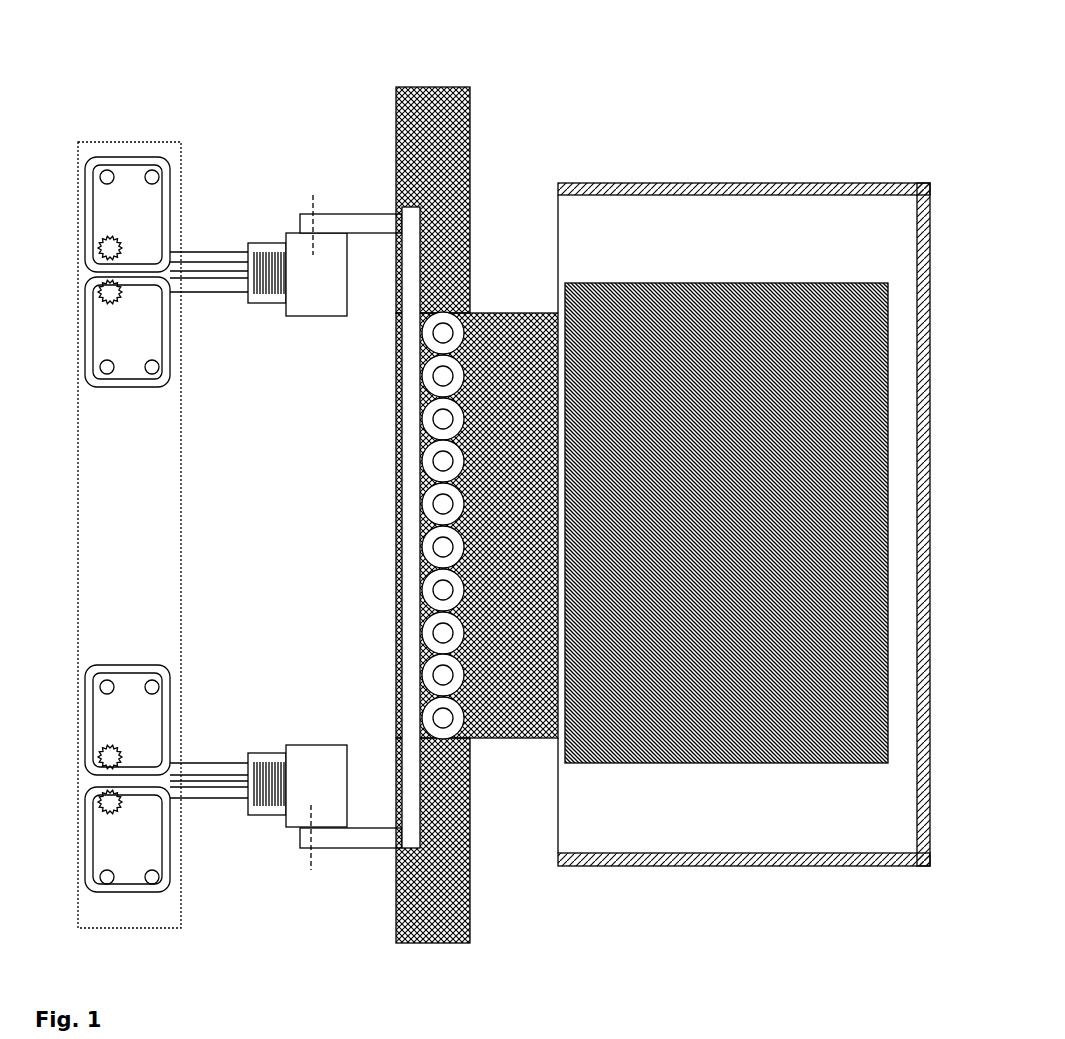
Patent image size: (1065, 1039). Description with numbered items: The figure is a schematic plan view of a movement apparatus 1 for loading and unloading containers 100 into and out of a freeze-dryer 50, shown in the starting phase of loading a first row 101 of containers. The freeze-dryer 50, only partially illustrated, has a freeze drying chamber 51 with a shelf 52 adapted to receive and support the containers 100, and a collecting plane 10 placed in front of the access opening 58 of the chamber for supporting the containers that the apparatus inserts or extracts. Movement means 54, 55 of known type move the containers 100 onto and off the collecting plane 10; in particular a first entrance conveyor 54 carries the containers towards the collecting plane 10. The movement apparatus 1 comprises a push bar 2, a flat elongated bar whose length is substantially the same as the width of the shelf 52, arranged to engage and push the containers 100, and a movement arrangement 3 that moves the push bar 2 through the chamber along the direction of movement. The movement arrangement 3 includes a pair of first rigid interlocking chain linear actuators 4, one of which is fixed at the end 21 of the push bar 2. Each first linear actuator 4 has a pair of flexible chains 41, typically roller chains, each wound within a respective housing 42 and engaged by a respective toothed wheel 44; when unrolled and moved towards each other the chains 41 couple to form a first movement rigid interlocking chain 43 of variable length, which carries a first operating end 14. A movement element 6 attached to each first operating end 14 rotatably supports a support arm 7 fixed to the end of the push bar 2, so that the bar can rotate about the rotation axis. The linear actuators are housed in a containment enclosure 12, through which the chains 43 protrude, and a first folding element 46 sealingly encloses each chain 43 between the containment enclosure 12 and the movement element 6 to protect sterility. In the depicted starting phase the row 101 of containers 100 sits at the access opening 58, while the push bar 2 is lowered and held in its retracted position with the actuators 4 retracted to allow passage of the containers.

The movement apparatus 1 is at (100, 108).
The push bar 2 is at (408, 546).
The movement arrangement 3 is at (207, 912).
The first rigid interlocking chain linear actuator 4 is at (198, 246).
The movement element 6 is at (326, 762).
The support arm 7 is at (334, 214).
The collecting plane 10 is at (516, 355).
The containment enclosure 12 is at (168, 622).
The first operating end 14 is at (275, 300).
The end of the push bar 21 is at (418, 228).
The chain 41 is at (132, 166).
The housing 42 is at (140, 212).
The first movement rigid interlocking chain 43 is at (232, 290).
The toothed wheel 44 is at (118, 296).
The first folding element 46 is at (232, 792).
The freeze-dryer 50 is at (806, 158).
The freeze drying chamber 51 is at (703, 822).
The shelf 52 is at (778, 744).
The first entrance conveyor 54 is at (432, 918).
The movement means 55 is at (452, 150).
The access opening 58 is at (536, 840).
The containers 100 is at (440, 416).
The row of containers 101 is at (482, 300).